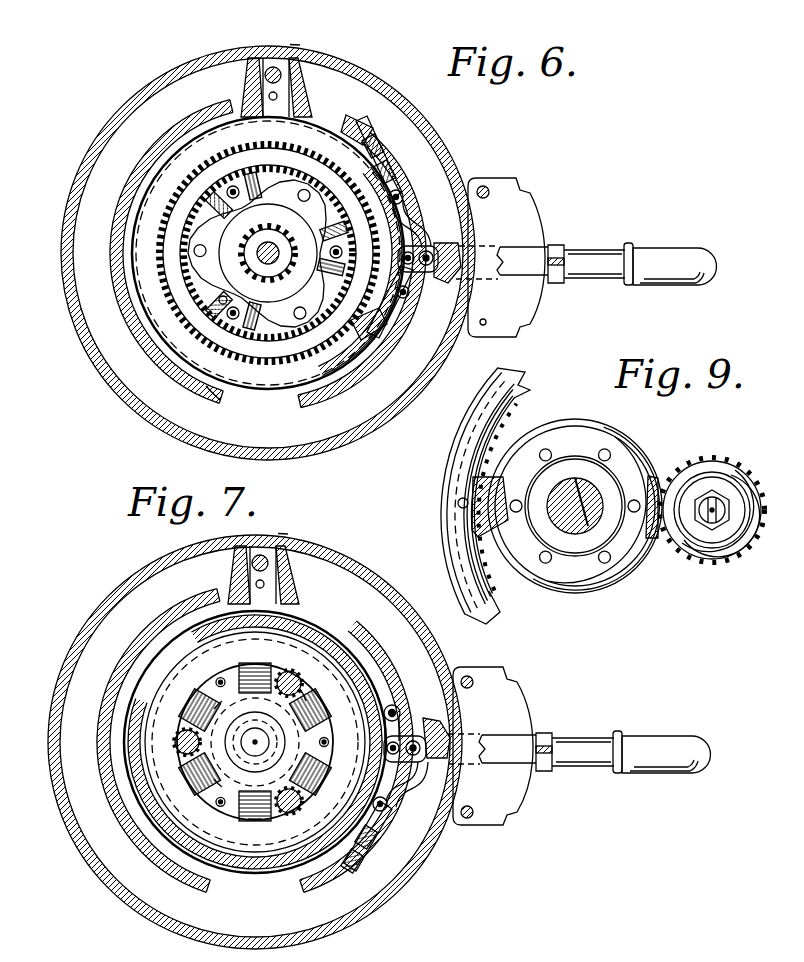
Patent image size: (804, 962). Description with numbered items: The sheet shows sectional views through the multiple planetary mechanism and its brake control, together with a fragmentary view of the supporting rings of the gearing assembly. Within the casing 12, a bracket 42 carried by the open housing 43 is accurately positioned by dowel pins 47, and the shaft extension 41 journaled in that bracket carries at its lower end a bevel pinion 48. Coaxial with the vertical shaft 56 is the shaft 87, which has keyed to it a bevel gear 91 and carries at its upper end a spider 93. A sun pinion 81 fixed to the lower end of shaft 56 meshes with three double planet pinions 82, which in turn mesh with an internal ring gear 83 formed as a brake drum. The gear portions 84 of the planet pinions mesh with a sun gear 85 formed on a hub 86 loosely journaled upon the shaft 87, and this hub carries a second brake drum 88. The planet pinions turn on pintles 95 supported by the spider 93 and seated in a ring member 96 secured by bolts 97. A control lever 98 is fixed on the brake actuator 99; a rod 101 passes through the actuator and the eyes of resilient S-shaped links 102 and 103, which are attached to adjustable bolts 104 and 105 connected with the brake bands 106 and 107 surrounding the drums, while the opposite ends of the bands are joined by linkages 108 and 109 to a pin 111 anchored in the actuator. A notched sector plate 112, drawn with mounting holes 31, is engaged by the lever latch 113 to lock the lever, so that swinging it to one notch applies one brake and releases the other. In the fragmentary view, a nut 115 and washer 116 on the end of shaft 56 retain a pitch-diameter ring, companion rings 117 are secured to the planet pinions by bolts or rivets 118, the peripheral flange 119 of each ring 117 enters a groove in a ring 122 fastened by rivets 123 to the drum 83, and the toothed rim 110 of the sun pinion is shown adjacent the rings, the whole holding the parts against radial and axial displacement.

In FIG. 6, the casing 12 is at (72, 303).
In FIG. 7, the casing 12 is at (72, 621).
In FIG. 6, the bolt hole 31 is at (485, 186).
In FIG. 7, the bolt hole 31 is at (468, 820).
In FIG. 6, the shaft extension 41 is at (299, 75).
In FIG. 7, the shaft extension 41 is at (288, 571).
In FIG. 6, the bracket 42 is at (245, 53).
In FIG. 7, the bracket 42 is at (232, 557).
In FIG. 6, the open housing 43 is at (132, 190).
In FIG. 7, the open housing 43 is at (122, 809).
In FIG. 6, the dowel pins 47 is at (267, 96).
In FIG. 7, the dowel pins 47 is at (254, 584).
In FIG. 6, the bevel pinion 48 is at (316, 50).
In FIG. 7, the bevel pinion 48 is at (300, 539).
In FIG. 6, the vertical shaft 56 is at (273, 225).
In FIG. 9, the vertical shaft 56 is at (708, 530).
In FIG. 6, the sun pinion 81 is at (272, 302).
In FIG. 9, the sun pinion 81 is at (726, 462).
In FIG. 6, the double planet pinions 82 is at (212, 198).
In FIG. 9, the double planet pinions 82 is at (654, 476).
In FIG. 6, the internal ring gear and brake drum 83 is at (206, 374).
In FIG. 9, the internal ring gear and brake drum 83 is at (500, 613).
In FIG. 7, the gear portions 84 is at (318, 698).
In FIG. 7, the sun gear 85 is at (196, 707).
In FIG. 7, the hub 86 is at (196, 787).
In FIG. 7, the shaft 87 is at (248, 819).
In FIG. 7, the brake drum 88 is at (140, 699).
In FIG. 6, the bevel gear 91 is at (216, 316).
In FIG. 7, the bevel gear 91 is at (320, 716).
In FIG. 7, the spider 93 is at (256, 669).
In FIG. 6, the pintles 95 is at (304, 189).
In FIG. 7, the pintles 95 is at (303, 681).
In FIG. 9, the pintles 95 is at (598, 518).
In FIG. 6, the ring member 96 is at (270, 175).
In FIG. 6, the bolts 97 is at (228, 186).
In FIG. 7, the bolts 97 is at (220, 677).
In FIG. 6, the control lever 98 is at (684, 262).
In FIG. 7, the control lever 98 is at (668, 738).
In FIG. 6, the brake actuator 99 is at (451, 281).
In FIG. 7, the brake actuator 99 is at (448, 723).
In FIG. 6, the rod 101 is at (429, 250).
In FIG. 7, the rod 101 is at (416, 739).
In FIG. 6, the resilient link 102 is at (429, 232).
In FIG. 7, the resilient link 103 is at (410, 791).
In FIG. 6, the adjustable bolt 104 is at (391, 178).
In FIG. 7, the adjustable bolt 105 is at (372, 837).
In FIG. 6, the brake band 106 is at (366, 109).
In FIG. 9, the brake band 106 is at (480, 456).
In FIG. 6, the brake band 107 is at (362, 270).
In FIG. 7, the brake band 107 is at (258, 879).
In FIG. 6, the linkage 108 is at (397, 322).
In FIG. 7, the linkage 109 is at (400, 706).
In FIG. 9, the gear rim 110 is at (702, 460).
In FIG. 6, the pin 111 is at (413, 265).
In FIG. 7, the pin 111 is at (387, 751).
In FIG. 6, the notched sector plate 112 is at (527, 237).
In FIG. 7, the notched sector plate 112 is at (520, 721).
In FIG. 6, the lever latch 113 is at (596, 262).
In FIG. 7, the lever latch 113 is at (598, 769).
In FIG. 9, the nut 115 is at (718, 540).
In FIG. 9, the washer 116 is at (714, 560).
In FIG. 9, the companion rings 117 is at (572, 430).
In FIG. 9, the bolts or rivets 118 is at (600, 563).
In FIG. 9, the peripheral tongue or flange 119 is at (598, 595).
In FIG. 9, the ring 122 is at (478, 533).
In FIG. 9, the rivets 123 is at (470, 501).